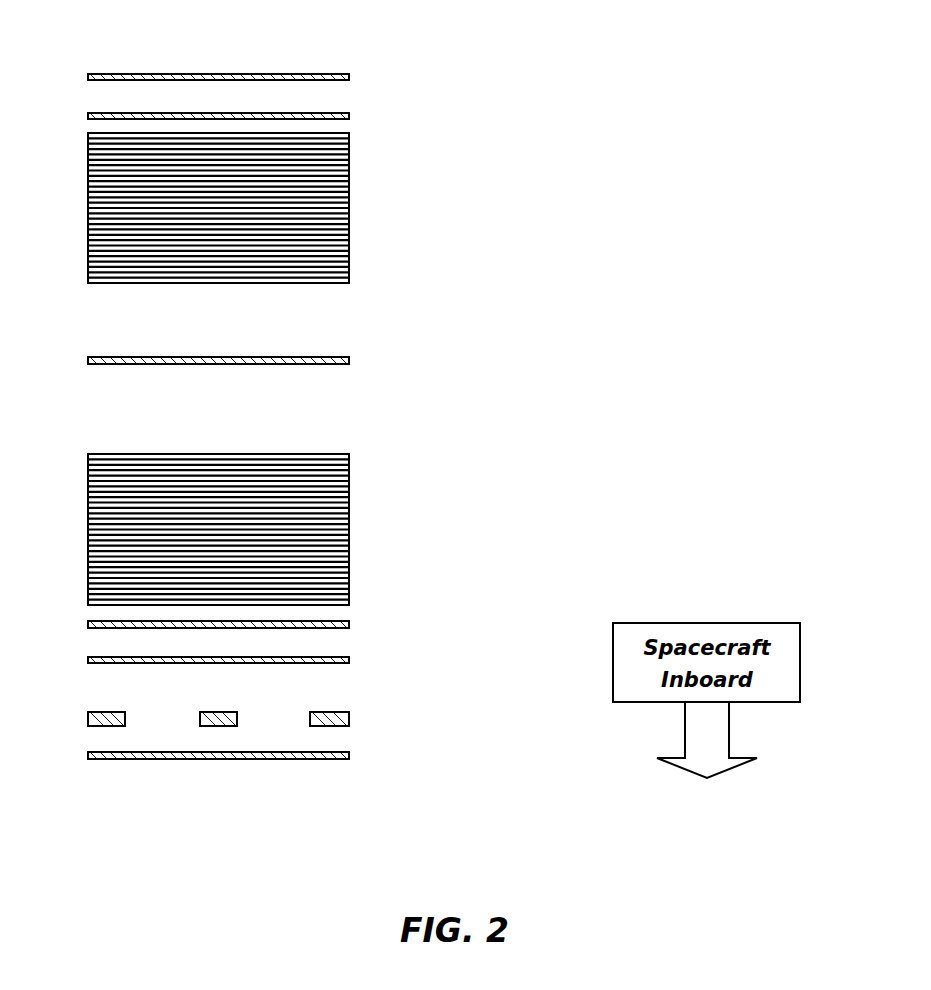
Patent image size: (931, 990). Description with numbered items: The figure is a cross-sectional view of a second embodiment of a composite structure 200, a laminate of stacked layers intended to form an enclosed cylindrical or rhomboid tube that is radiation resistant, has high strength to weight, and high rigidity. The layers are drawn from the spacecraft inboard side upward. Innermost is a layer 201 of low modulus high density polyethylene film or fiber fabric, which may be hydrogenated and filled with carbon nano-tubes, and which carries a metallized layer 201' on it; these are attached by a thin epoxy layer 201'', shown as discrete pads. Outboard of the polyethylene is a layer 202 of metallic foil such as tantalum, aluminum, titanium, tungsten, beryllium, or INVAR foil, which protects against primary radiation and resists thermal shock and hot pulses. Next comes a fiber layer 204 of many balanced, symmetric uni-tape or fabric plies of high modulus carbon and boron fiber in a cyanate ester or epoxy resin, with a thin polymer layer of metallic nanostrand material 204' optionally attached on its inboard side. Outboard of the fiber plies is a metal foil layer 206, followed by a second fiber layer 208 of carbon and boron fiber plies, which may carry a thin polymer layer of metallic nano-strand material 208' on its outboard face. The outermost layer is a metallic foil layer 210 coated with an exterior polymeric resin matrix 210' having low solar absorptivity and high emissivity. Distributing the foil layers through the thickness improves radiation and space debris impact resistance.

The composite structure 200 is at (569, 64).
The metallic foil layer 210 is at (267, 65).
The exterior polymeric resin matrix 210' is at (319, 41).
The thin polymer layer of metallic nano-strand material 208' is at (270, 103).
The fiber layer 208 is at (267, 208).
The metal foil layer 206 is at (349, 361).
The fiber layer 204 is at (267, 529).
The thin polymer layer of metallic nanostrand material 204' is at (275, 609).
The metallic foil layer 202 is at (349, 660).
The thin epoxy layer 201'' is at (282, 710).
The layer of low modulus high density polyethylene film or fiber fabric 201 is at (276, 744).
The metallized layer 201' is at (380, 787).